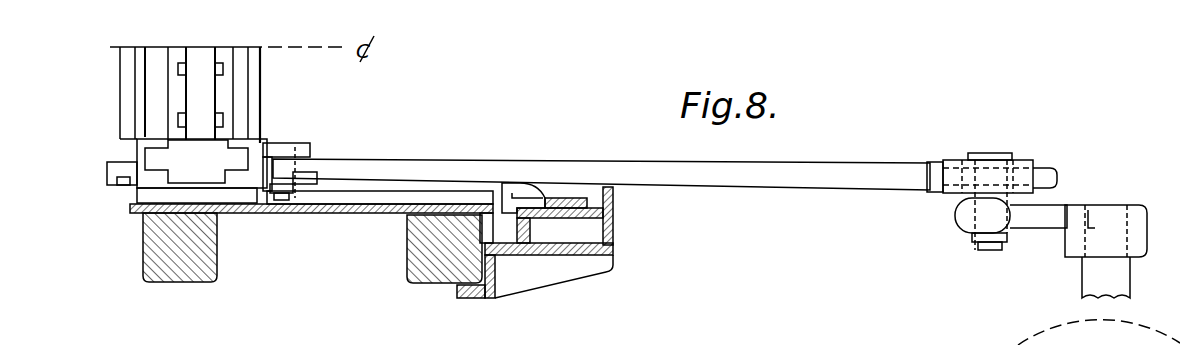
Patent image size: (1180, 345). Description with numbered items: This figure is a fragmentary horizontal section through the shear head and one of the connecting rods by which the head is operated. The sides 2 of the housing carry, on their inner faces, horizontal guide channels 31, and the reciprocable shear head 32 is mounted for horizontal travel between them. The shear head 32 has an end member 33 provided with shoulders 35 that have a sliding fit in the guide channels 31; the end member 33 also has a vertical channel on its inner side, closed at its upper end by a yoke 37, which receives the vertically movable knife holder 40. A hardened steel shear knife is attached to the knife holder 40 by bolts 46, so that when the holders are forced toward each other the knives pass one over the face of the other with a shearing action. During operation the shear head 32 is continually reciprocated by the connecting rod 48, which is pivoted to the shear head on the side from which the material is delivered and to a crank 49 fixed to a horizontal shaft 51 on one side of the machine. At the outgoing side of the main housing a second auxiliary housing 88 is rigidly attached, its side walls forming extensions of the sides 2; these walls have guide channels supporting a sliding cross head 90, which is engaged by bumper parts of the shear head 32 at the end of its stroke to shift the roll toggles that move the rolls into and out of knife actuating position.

The sides of the housing 2 is at (185, 270).
The horizontal guide channels 31 is at (350, 197).
The shear head 32 is at (262, 110).
The end member 33 is at (248, 145).
The shoulders 35 is at (247, 192).
The yokes 37 is at (187, 163).
The knife holder 40 is at (203, 87).
The bolts 46 is at (221, 69).
The connecting rods 48 is at (741, 185).
The cranks 49 is at (1057, 228).
The shaft 51 is at (1130, 286).
The second auxiliary housing 88 is at (578, 268).
The cross head 90 is at (613, 228).